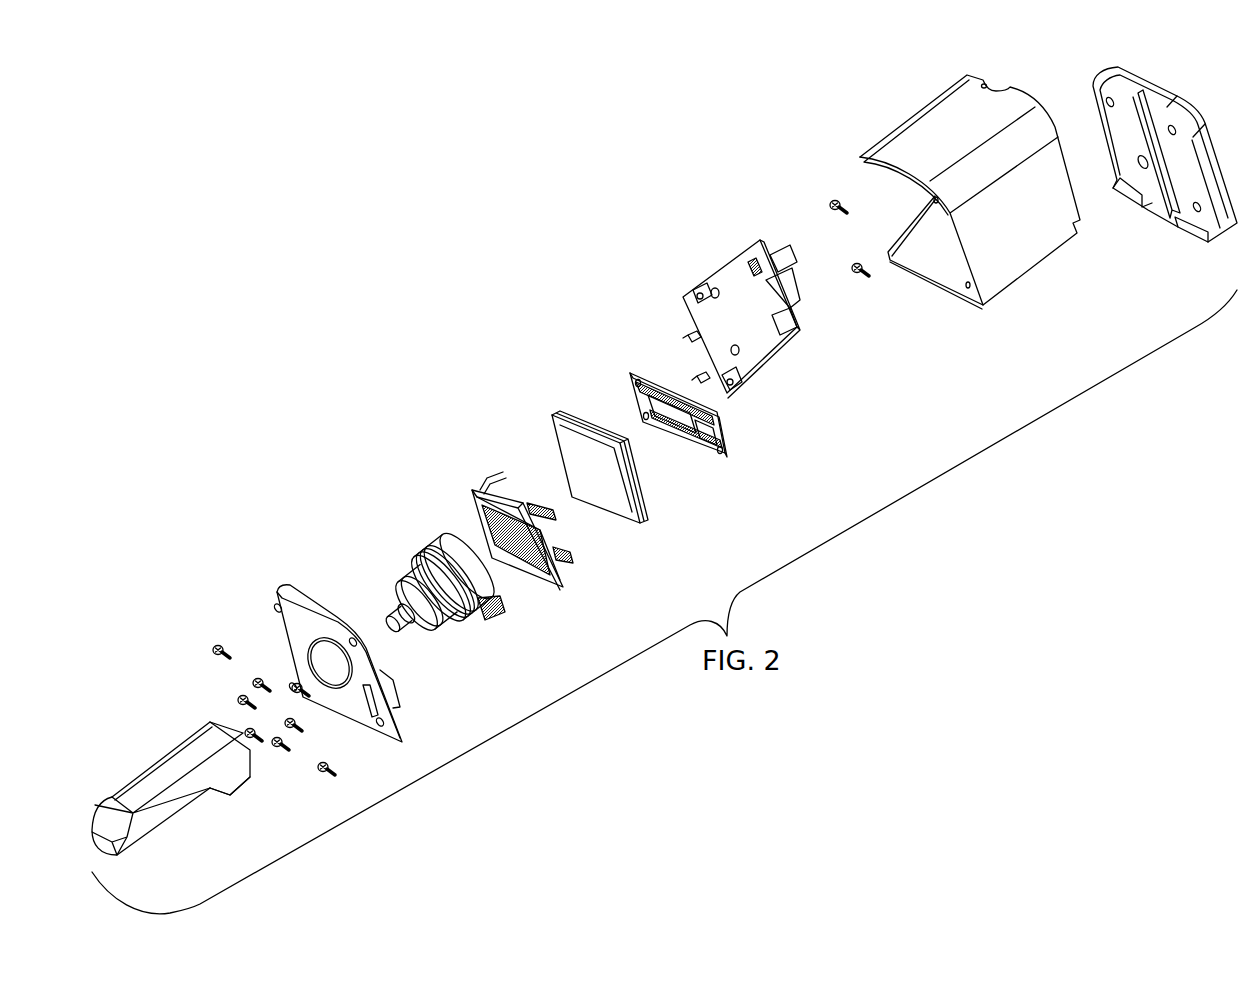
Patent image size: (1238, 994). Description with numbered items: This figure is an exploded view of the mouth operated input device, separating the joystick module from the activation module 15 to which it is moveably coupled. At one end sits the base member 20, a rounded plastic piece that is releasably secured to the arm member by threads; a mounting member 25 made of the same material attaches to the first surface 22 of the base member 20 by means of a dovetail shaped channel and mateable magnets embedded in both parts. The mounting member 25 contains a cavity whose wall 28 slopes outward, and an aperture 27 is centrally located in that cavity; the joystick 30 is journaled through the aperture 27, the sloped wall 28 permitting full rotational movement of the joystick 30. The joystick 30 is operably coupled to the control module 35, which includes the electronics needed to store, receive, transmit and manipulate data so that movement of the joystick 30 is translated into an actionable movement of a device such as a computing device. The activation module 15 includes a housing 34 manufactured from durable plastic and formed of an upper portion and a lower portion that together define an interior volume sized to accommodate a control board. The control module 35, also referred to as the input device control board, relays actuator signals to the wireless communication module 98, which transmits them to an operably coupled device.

The activation module 15 is at (112, 778).
The base member 20 is at (1155, 136).
The first surface 22 is at (1098, 84).
The mounting member 25 is at (988, 85).
The aperture 27 is at (320, 676).
The wall 28 is at (311, 613).
The joystick 30 is at (418, 560).
The housing 34 is at (172, 765).
The control module 35 is at (633, 374).
The wireless communication module 98 is at (663, 417).